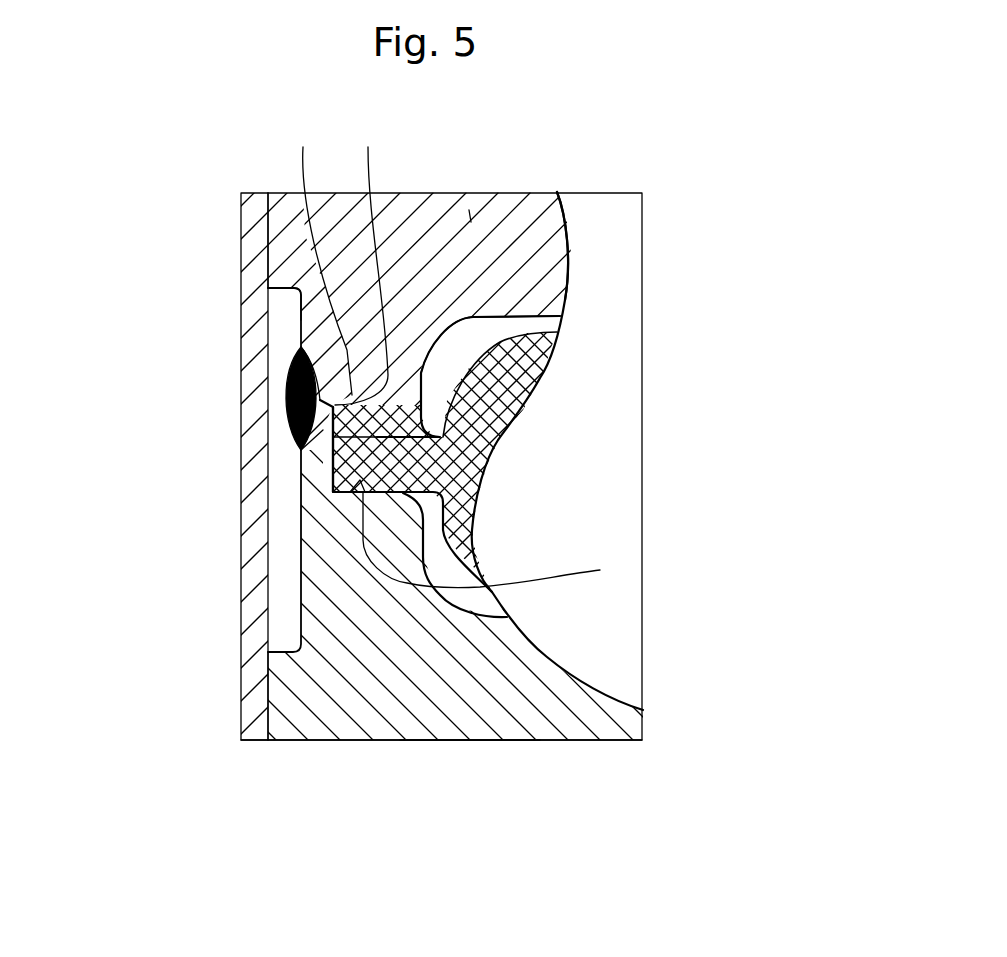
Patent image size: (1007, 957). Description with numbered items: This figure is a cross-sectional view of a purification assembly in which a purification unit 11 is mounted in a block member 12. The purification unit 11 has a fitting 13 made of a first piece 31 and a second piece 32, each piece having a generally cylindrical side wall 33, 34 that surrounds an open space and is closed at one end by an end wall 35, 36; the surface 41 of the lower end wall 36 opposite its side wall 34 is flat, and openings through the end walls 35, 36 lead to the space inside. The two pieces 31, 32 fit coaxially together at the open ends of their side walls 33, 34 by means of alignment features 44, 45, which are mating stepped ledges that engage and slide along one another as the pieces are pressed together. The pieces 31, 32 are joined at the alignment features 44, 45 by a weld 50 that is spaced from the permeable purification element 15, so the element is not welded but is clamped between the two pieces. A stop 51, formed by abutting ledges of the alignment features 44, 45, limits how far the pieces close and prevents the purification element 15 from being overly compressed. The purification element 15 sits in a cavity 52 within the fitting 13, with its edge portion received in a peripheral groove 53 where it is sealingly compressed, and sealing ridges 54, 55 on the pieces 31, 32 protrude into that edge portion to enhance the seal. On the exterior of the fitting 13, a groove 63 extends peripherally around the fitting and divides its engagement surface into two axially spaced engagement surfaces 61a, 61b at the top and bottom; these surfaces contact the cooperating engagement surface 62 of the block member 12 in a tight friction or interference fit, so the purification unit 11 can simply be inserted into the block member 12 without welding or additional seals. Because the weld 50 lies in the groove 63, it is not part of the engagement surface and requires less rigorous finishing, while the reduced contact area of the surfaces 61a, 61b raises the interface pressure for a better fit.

The purification unit 11 is at (538, 207).
The block member 12 is at (250, 470).
The fitting 13 is at (485, 210).
The permeable purification element 15 is at (492, 387).
The first piece 31 is at (412, 237).
The second piece 32 is at (394, 712).
The side wall 33 is at (320, 350).
The side wall 34 is at (337, 515).
The end wall 35 is at (469, 210).
The end wall 36 is at (470, 722).
The flat surface 41 is at (550, 742).
The alignment feature 44 is at (322, 258).
The alignment feature 45 is at (323, 430).
The weld 50 is at (290, 398).
The stop 51 is at (361, 263).
The cavity 52 is at (482, 330).
The peripheral groove 53 is at (377, 462).
The sealing ridge 54 is at (487, 320).
The sealing ridge 55 is at (600, 570).
The engagement surface 61a is at (268, 238).
The engagement surface 61b is at (270, 700).
The engagement surface 62 is at (288, 603).
The groove 63 is at (300, 315).